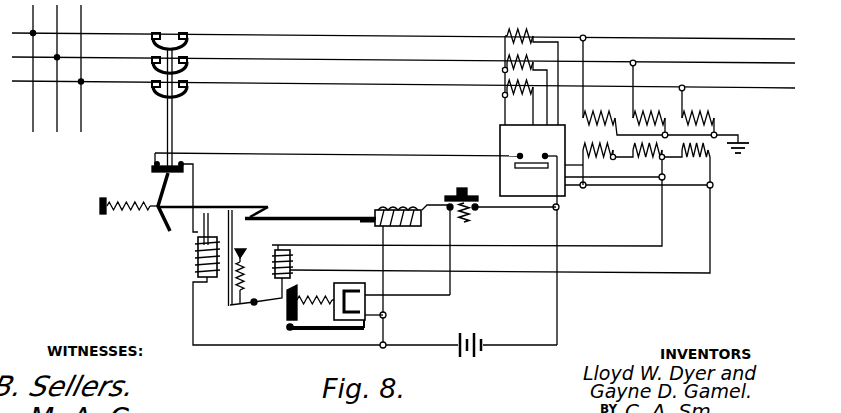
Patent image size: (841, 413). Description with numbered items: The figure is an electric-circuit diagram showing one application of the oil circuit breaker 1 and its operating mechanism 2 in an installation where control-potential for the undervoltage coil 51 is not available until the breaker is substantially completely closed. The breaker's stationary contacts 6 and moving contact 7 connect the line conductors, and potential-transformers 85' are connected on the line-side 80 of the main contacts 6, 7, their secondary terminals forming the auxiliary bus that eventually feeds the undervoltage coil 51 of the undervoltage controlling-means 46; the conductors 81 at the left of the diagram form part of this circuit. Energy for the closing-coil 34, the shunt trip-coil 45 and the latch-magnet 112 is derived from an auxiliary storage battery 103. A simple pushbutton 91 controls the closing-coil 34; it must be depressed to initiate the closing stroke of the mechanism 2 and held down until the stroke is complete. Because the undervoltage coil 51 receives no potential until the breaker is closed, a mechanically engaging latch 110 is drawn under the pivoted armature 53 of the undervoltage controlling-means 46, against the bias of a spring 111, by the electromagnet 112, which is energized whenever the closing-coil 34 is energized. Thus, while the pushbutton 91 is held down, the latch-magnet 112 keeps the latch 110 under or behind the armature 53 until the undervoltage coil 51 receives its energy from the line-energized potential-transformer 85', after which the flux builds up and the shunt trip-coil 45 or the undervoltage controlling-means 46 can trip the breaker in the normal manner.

The line-side 80 is at (739, 88).
The bus conductors 81 is at (33, 20).
The moving contact 7 is at (170, 40).
The stationary contacts 6 is at (153, 34).
The oil circuit breaker 1 is at (152, 133).
The operating mechanism 2 is at (230, 195).
The potential-transformers 85' is at (673, 94).
The closing-coil 34 is at (408, 210).
The pushbutton 91 is at (467, 194).
The shunt trip-coil 45 is at (196, 252).
The undervoltage controlling-means 46 is at (182, 317).
The pivoted armature 53 is at (254, 276).
The undervoltage coil 51 is at (292, 259).
The latch 110 is at (288, 316).
The spring 111 is at (315, 290).
The electromagnet 112 is at (370, 302).
The auxiliary storage battery 103 is at (477, 336).